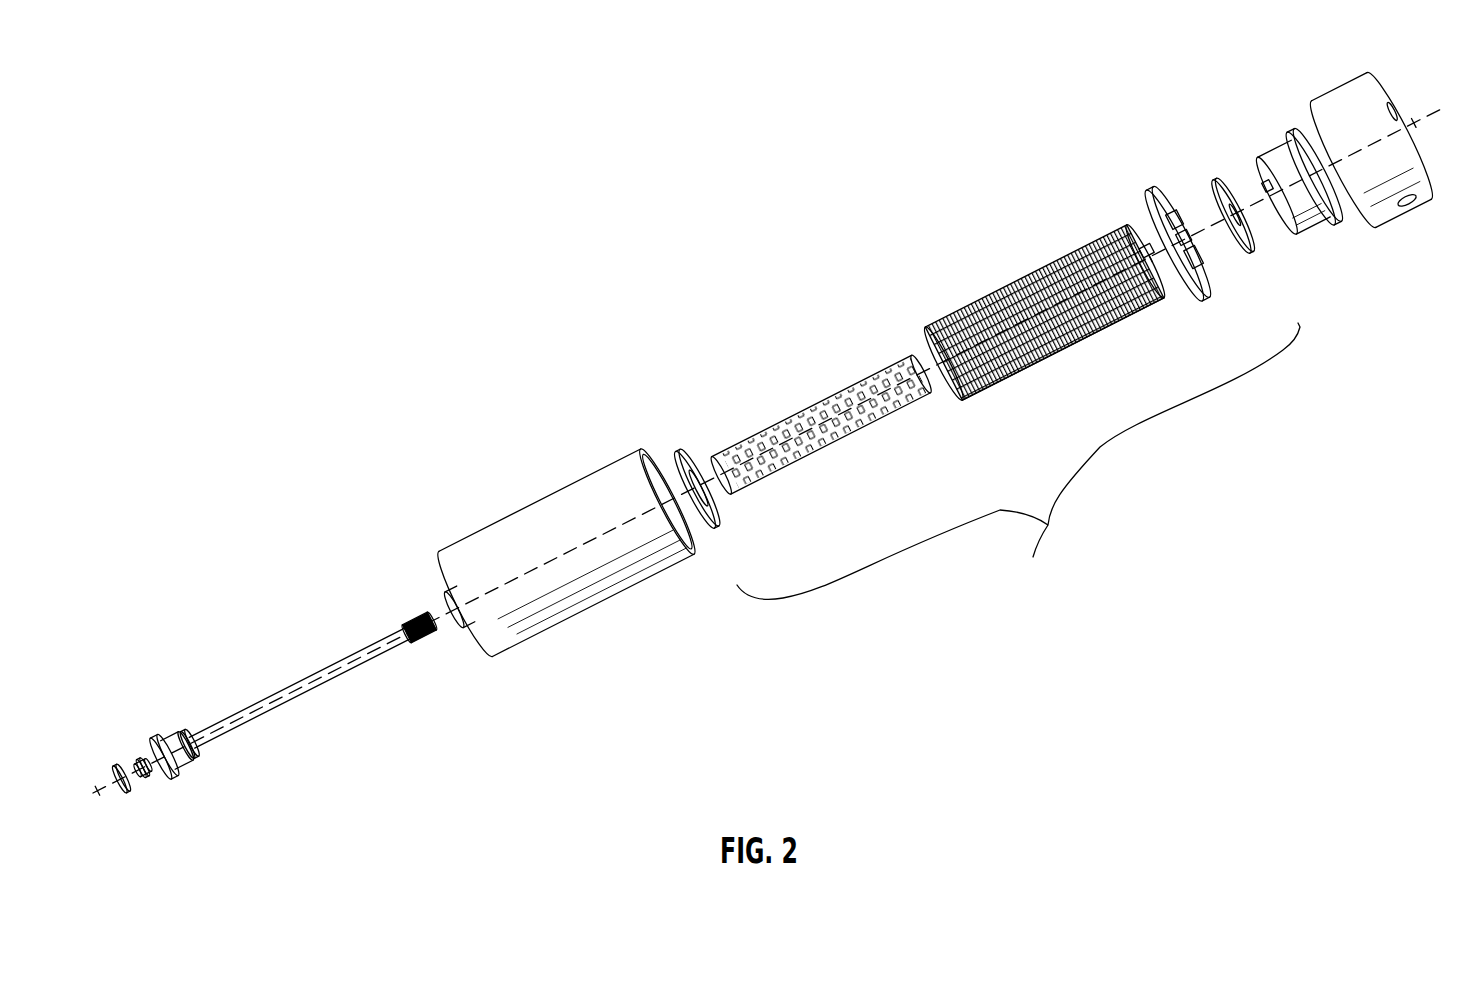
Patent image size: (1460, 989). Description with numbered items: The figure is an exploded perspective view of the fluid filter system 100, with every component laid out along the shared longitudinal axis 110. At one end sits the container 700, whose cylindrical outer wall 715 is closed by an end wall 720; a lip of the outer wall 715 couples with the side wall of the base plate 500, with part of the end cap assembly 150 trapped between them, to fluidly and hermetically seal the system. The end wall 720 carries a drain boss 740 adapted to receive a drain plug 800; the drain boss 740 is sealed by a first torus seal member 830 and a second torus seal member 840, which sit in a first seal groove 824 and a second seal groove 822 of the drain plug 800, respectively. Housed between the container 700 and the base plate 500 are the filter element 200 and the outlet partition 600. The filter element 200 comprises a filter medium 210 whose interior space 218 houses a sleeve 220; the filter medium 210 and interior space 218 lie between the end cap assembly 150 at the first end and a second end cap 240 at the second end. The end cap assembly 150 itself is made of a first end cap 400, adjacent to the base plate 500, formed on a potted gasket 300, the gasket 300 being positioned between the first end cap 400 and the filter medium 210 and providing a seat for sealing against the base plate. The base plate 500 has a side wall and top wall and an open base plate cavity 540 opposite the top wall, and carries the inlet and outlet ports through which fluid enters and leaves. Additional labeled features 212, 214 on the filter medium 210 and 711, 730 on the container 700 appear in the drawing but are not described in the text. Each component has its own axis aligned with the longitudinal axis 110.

The fluid filter system 100 is at (448, 172).
The longitudinal axis 110 is at (98, 805).
The end cap assembly 150 is at (1190, 57).
The filter element 200 is at (1004, 318).
The filter medium 210 is at (1037, 262).
The coil end 212 is at (963, 308).
The coil outer surface 214 is at (963, 400).
The interior space 218 is at (1146, 248).
The sleeve 220 is at (797, 407).
The second end cap 240 is at (678, 440).
The potted gasket 300 is at (1151, 172).
The first end cap 400 is at (1208, 163).
The base plate 500 is at (1357, 88).
The base plate cavity 540 is at (1310, 102).
The outlet partition 600 is at (1342, 233).
The container 700 is at (532, 494).
The housing open end 711 is at (643, 451).
The outer wall 715 is at (593, 472).
The end wall 720 is at (441, 548).
The housing inner lip 730 is at (687, 523).
The drain boss 740 is at (464, 630).
The drain plug 800 is at (292, 675).
The second seal groove 822 is at (170, 737).
The first seal groove 824 is at (213, 753).
The first torus seal member 830 is at (150, 783).
The second torus seal member 840 is at (116, 758).